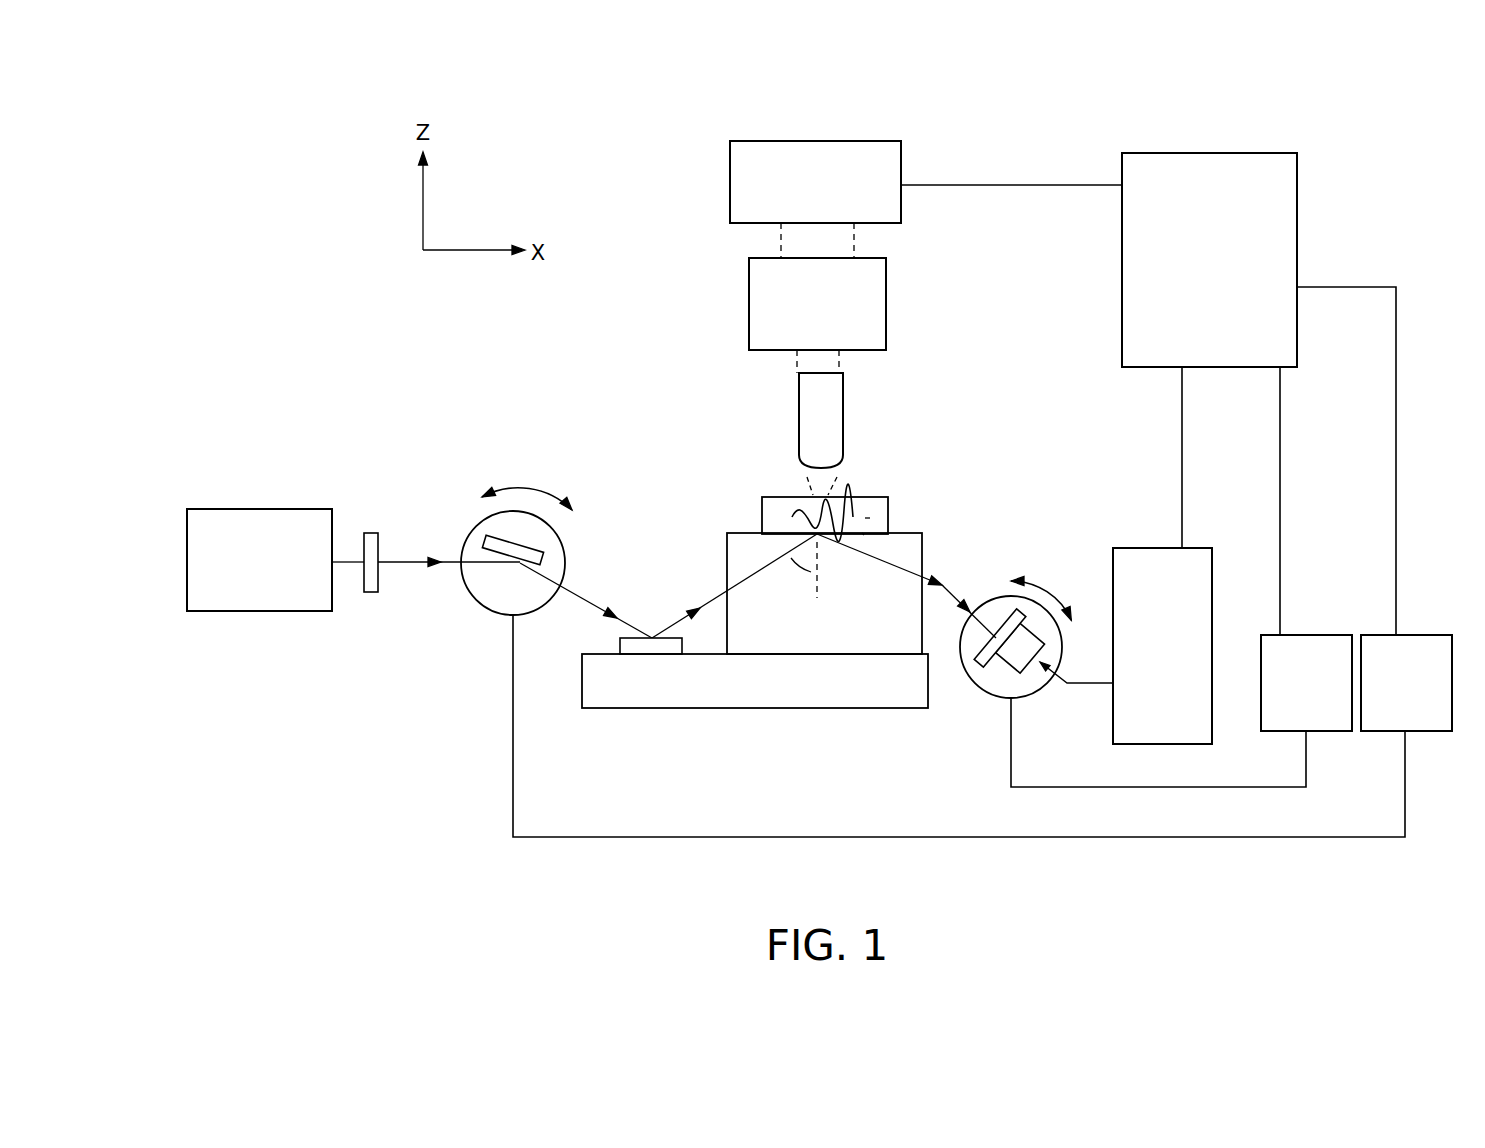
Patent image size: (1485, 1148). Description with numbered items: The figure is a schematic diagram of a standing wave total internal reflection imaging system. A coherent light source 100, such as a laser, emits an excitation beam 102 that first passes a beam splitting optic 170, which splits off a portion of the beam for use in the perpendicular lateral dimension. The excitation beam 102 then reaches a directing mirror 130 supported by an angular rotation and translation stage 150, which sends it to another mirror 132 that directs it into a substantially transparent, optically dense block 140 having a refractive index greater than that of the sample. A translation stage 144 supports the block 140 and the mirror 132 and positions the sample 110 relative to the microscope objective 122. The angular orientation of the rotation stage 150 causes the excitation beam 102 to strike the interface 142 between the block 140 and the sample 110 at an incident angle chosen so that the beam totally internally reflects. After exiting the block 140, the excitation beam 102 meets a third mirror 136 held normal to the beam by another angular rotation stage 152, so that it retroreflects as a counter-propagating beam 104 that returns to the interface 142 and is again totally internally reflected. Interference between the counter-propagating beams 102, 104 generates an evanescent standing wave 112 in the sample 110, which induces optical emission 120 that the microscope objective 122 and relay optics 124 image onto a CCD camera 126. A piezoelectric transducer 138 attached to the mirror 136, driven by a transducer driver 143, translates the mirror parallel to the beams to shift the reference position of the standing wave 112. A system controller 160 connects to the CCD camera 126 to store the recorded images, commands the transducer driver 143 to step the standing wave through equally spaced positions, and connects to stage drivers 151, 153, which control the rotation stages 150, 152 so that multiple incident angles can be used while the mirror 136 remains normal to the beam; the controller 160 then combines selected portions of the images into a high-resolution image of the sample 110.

The coherent light source 100 is at (255, 611).
The excitation beam 102 is at (405, 548).
The counter-propagating beam 104 is at (971, 610).
The sample 110 is at (762, 507).
The evanescent standing wave 112 is at (865, 518).
The optical emission 120 is at (847, 485).
The microscope objective 122 is at (843, 413).
The relay optics 124 is at (886, 308).
The CCD camera 126 is at (822, 141).
The directing mirror 130 is at (540, 548).
The mirror 132 is at (632, 645).
The third mirror 136 is at (1003, 612).
The piezoelectric transducer 138 is at (1024, 650).
The optically dense block 140 is at (857, 630).
The interface 142 is at (862, 537).
The transducer driver 143 is at (1150, 744).
The translation stage 144 is at (737, 695).
The angular rotation and translation stage 150 is at (475, 603).
The stage driver 151 is at (1420, 731).
The angular rotation stage 152 is at (985, 698).
The stage driver 153 is at (1279, 731).
The system controller 160 is at (1297, 263).
The beam splitting optic 170 is at (369, 592).